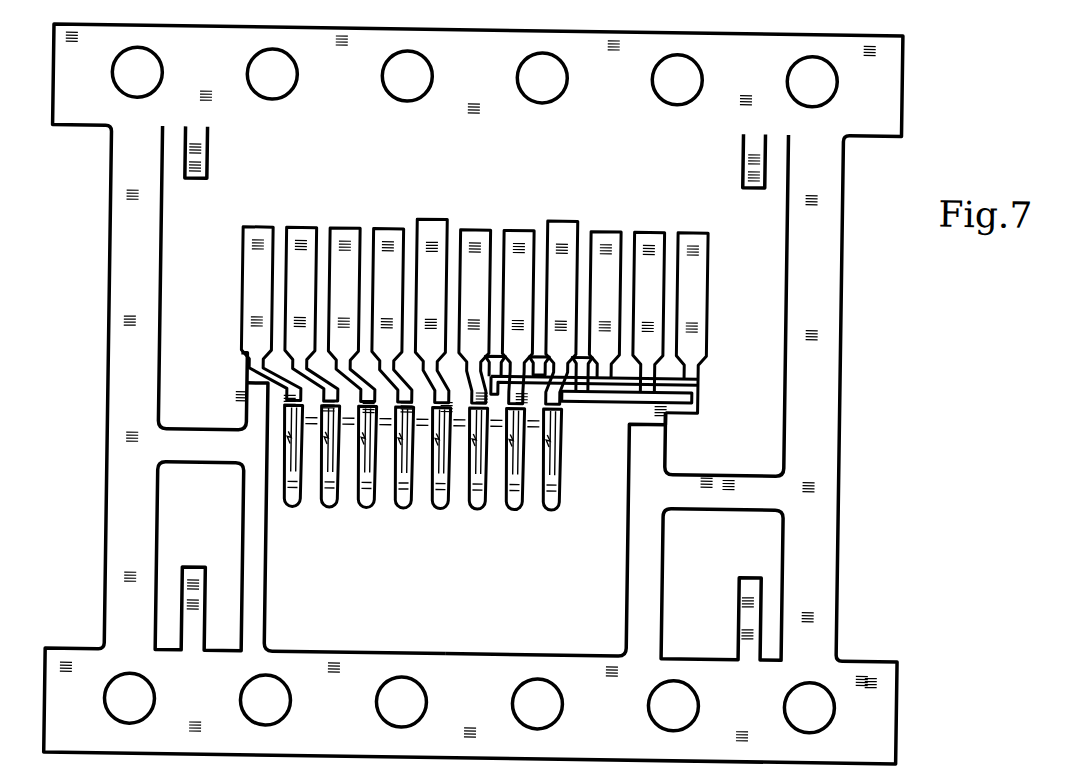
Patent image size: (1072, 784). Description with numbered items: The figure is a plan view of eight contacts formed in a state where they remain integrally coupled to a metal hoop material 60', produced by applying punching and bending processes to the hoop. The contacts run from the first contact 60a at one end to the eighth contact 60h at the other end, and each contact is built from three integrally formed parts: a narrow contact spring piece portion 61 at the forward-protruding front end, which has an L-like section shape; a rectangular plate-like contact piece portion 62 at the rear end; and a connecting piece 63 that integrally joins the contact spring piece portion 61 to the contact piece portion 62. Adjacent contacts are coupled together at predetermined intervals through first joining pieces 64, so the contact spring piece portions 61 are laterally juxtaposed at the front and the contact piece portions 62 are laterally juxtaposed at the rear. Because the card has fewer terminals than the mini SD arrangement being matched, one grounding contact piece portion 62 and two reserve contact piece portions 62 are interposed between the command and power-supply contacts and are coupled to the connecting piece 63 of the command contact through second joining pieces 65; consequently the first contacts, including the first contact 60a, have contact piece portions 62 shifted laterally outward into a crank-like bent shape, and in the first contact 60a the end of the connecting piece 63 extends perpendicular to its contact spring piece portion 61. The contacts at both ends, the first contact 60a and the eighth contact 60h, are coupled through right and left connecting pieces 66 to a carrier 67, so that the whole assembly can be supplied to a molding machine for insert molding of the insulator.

The metal hoop material 60' is at (521, 394).
The first contact 60a is at (555, 533).
The eighth contact 60h is at (299, 520).
The contact spring piece portion 61 is at (291, 490).
The contact piece portion 62 is at (261, 238).
The connecting piece 63 is at (303, 238).
The first joining piece 64 is at (673, 374).
The second joining piece 65 is at (490, 352).
The connecting piece 66 is at (252, 408).
The carrier 67 is at (903, 45).